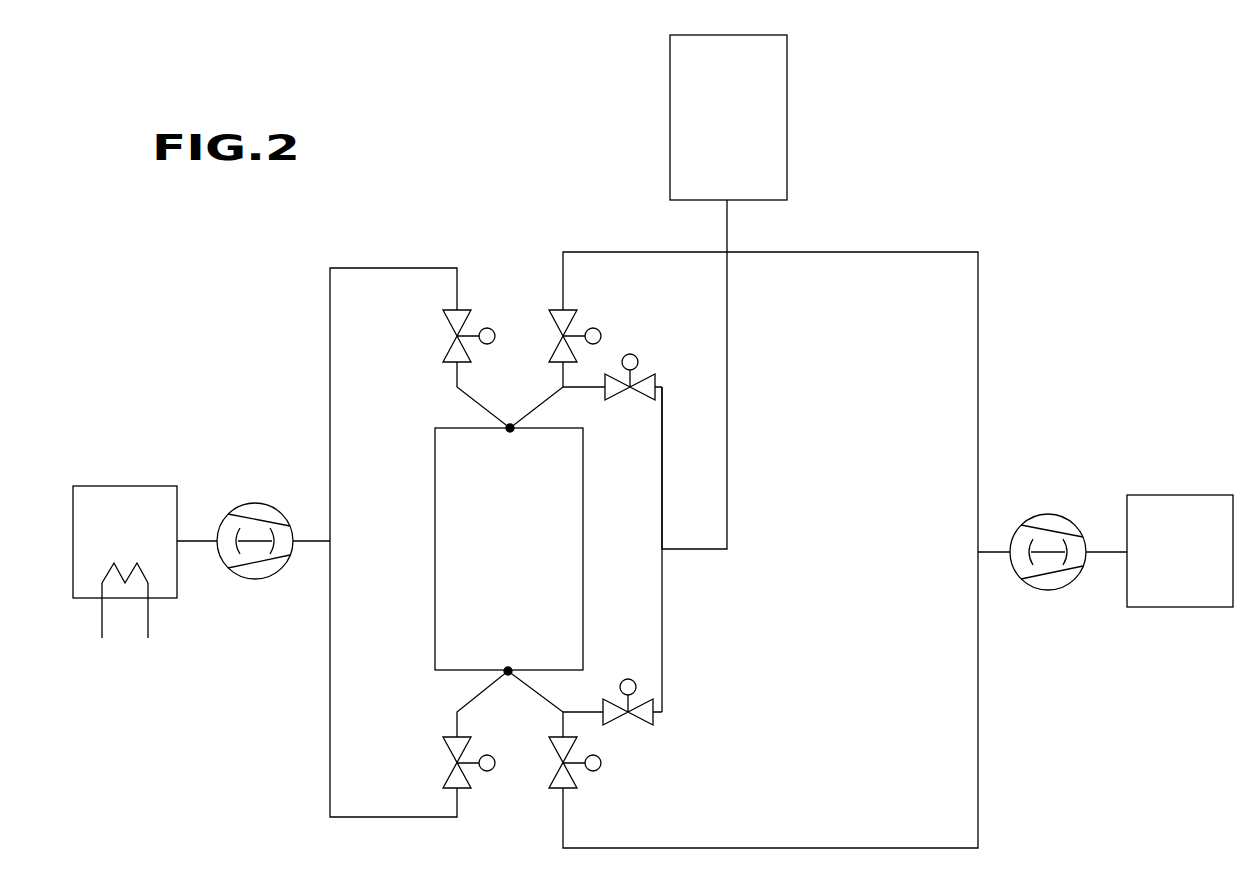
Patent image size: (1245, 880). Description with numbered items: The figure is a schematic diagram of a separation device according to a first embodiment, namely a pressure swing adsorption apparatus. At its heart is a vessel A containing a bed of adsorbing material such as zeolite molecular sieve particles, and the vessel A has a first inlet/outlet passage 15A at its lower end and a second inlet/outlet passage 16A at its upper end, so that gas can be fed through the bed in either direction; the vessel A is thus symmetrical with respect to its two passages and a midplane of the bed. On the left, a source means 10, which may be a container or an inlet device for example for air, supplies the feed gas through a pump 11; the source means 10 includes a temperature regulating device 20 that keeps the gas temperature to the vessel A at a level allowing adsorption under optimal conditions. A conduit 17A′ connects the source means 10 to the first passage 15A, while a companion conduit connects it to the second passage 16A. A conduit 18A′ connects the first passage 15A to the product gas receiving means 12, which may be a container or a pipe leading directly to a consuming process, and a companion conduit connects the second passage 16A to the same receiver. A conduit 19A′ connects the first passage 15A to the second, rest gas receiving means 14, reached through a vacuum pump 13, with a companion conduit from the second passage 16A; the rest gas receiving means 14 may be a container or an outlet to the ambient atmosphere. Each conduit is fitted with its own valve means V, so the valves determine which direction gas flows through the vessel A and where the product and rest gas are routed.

The source means 10 is at (130, 515).
The pump 11 is at (236, 505).
The product gas receiving means 12 is at (760, 123).
The vacuum pump 13 is at (1045, 513).
The second, rest gas receiving means 14 is at (1178, 520).
The first inlet/outlet passage 15A is at (527, 630).
The second inlet/outlet passage 16A is at (510, 423).
The vessel A is at (460, 545).
The conduit 17A′ is at (330, 733).
The conduit 18A′ is at (660, 640).
The conduit 19A′ is at (850, 848).
The temperature regulating device 20 is at (148, 618).
The valve means V is at (455, 318).